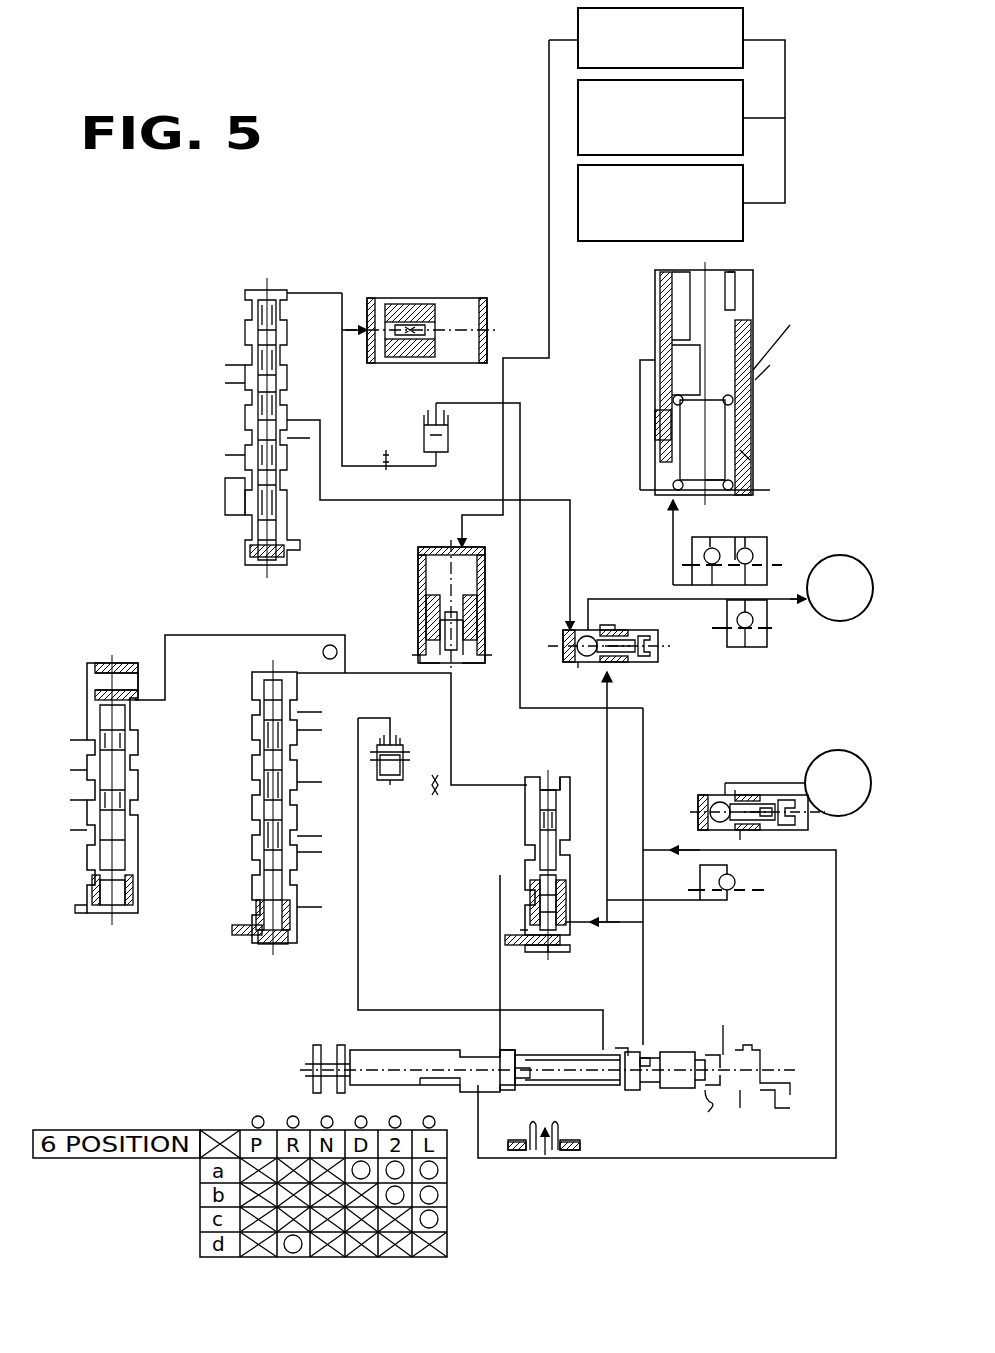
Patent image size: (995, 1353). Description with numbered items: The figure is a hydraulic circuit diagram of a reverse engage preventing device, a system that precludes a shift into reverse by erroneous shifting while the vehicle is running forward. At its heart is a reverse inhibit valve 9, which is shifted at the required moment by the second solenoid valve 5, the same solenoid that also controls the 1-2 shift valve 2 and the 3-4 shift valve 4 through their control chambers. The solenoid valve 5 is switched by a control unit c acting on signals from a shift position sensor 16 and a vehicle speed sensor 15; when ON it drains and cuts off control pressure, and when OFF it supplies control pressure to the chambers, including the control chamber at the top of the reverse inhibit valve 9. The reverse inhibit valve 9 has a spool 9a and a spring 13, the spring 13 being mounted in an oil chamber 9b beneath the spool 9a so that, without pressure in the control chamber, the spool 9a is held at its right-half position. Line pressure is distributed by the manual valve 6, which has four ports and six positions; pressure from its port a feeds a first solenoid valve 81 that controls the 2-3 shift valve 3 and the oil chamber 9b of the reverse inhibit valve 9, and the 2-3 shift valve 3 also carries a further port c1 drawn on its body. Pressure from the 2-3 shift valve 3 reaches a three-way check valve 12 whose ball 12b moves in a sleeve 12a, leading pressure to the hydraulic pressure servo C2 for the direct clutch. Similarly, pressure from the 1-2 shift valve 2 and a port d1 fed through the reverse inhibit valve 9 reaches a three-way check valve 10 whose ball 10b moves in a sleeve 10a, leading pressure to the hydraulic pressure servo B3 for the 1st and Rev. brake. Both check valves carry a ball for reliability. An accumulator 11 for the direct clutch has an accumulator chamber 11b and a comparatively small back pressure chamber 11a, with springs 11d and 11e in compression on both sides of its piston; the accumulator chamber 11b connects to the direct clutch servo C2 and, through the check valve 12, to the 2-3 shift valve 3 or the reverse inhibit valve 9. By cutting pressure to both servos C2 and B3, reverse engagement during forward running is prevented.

The control unit c is at (743, 10).
The vehicle speed sensor 15 is at (743, 100).
The shift position sensor 16 is at (743, 187).
The 2-3 shift valve 3 is at (285, 292).
The port c1 is at (225, 482).
The first solenoid valve 81 is at (490, 328).
The accumulator 11 is at (650, 325).
The spring 11e is at (735, 310).
The back pressure chamber 11a is at (753, 415).
The spring 11d is at (740, 450).
The accumulator chamber 11b is at (715, 480).
The hydraulic pressure servo for the direct clutch C2 is at (840, 588).
The three-way check valve 12 is at (658, 640).
The sleeve 12a is at (608, 628).
The ball 12b is at (578, 668).
The second solenoid valve 5 is at (418, 557).
The reverse inhibit valve 9 is at (535, 770).
The spool 9a is at (562, 805).
The oil chamber 9b is at (560, 900).
The spring 13 is at (555, 945).
The three-way check valve 10 is at (808, 826).
The ball 10b is at (735, 790).
The port d1 is at (740, 840).
The sleeve 10a is at (735, 830).
The hydraulic pressure servo for the 1st & Rev. brake B3 is at (838, 783).
The 3-4 shift valve 4 is at (86, 680).
The 1-2 shift valve 2 is at (305, 648).
The manual valve 6 is at (298, 1046).